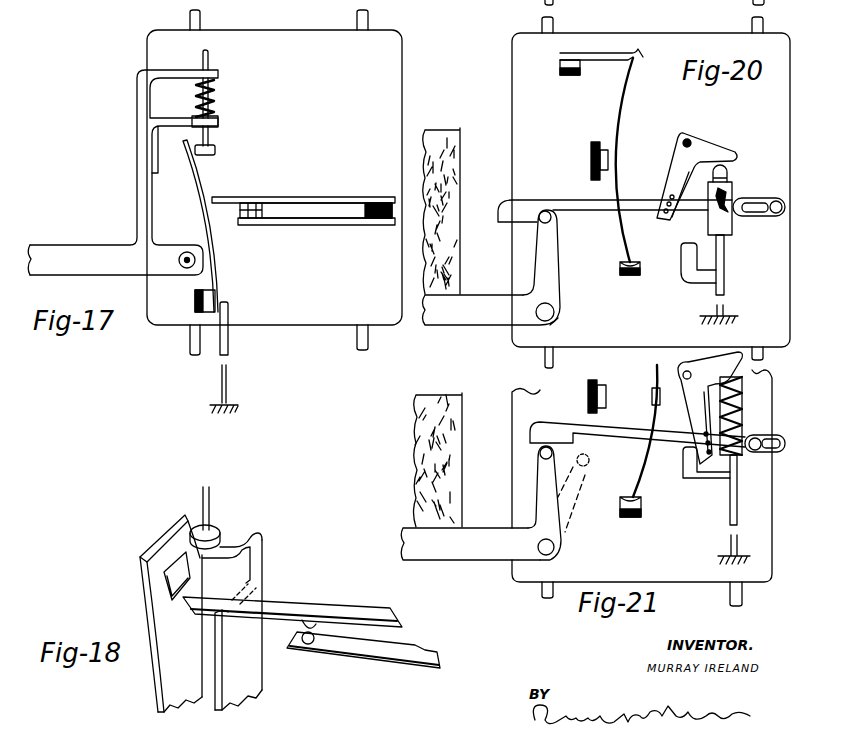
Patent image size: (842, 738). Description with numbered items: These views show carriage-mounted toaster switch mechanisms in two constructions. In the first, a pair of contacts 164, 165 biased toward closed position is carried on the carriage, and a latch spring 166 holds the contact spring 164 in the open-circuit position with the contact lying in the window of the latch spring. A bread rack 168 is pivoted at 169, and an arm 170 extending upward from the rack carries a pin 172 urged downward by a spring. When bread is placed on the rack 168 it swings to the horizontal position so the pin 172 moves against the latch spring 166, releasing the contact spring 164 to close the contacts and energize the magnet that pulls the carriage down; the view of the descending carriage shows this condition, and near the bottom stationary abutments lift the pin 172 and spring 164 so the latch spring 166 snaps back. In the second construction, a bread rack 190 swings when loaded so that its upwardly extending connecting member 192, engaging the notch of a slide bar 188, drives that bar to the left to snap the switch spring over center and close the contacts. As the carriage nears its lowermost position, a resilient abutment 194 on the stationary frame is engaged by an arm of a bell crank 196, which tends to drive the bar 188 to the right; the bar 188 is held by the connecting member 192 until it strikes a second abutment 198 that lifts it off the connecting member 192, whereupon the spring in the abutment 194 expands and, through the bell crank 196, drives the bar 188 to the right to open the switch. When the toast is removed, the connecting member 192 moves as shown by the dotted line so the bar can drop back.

In FIG. 17, the contact spring 164 is at (313, 202).
In FIG. 18, the contact spring 164 is at (298, 603).
In FIG. 18, the contact 165 is at (373, 665).
In FIG. 18, the latch spring 166 is at (163, 590).
In FIG. 17, the bread rack 168 is at (90, 258).
In FIG. 17, the pivot 169 is at (186, 251).
In FIG. 17, the arm 170 is at (230, 351).
In FIG. 18, the arm 170 is at (258, 682).
In FIG. 17, the pin 172 is at (217, 150).
In FIG. 18, the pin 172 is at (210, 528).
In FIG. 20, the slide bar 188 is at (577, 200).
In FIG. 21, the slide bar 188 is at (617, 434).
In FIG. 20, the bread rack 190 is at (476, 300).
In FIG. 21, the bread rack 190 is at (478, 550).
In FIG. 20, the connecting member 192 is at (554, 258).
In FIG. 21, the connecting member 192 is at (540, 485).
In FIG. 20, the resilient abutment 194 is at (730, 174).
In FIG. 21, the resilient abutment 194 is at (748, 378).
In FIG. 20, the bell crank 196 is at (707, 146).
In FIG. 21, the second abutment 198 is at (688, 458).